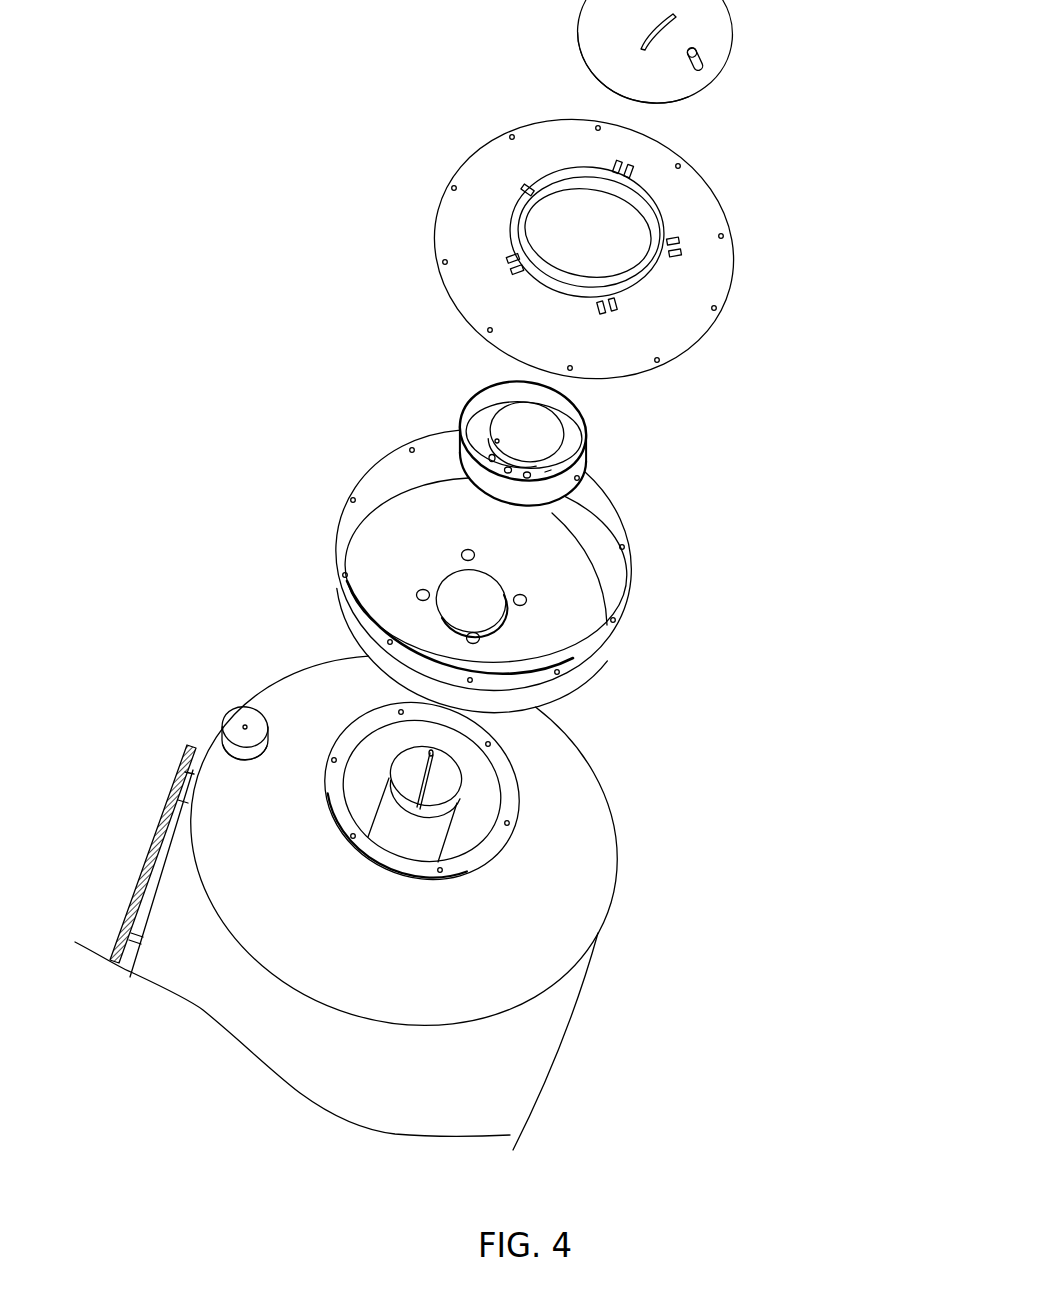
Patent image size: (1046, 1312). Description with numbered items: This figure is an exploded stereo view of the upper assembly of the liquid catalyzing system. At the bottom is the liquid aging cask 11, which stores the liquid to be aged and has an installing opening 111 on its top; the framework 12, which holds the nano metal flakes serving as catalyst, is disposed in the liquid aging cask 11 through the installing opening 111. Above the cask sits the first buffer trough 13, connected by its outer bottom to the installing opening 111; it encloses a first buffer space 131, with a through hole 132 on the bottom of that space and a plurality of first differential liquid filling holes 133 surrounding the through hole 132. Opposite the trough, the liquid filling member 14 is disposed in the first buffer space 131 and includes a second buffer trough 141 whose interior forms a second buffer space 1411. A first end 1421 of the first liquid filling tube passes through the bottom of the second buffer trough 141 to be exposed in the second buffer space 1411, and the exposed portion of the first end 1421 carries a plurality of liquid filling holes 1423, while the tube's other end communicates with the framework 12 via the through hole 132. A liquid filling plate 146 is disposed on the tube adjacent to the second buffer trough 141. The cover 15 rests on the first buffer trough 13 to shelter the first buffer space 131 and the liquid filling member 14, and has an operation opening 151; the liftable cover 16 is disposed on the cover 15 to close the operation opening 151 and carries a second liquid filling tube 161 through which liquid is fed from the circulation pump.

The liquid aging cask 11 is at (512, 1020).
The installing opening 111 is at (363, 772).
The framework 12 is at (474, 827).
The first buffer trough 13 is at (621, 636).
The first buffer space 131 is at (585, 577).
The through hole 132 is at (455, 582).
The first differential liquid filling holes 133 is at (520, 600).
The liquid filling member 14 is at (615, 456).
The second buffer trough 141 is at (468, 459).
The second buffer space 1411 is at (483, 412).
The first end 1421 is at (492, 453).
The liquid filling holes 1423 is at (508, 473).
The liquid filling plate 146 is at (478, 493).
The cover 15 is at (733, 292).
The operation opening 151 is at (592, 205).
The liftable cover 16 is at (742, 38).
The second liquid filling tube 161 is at (698, 72).